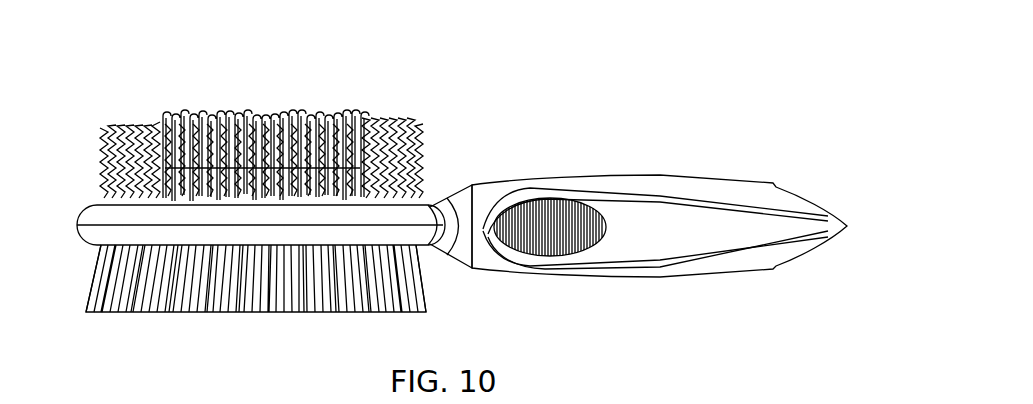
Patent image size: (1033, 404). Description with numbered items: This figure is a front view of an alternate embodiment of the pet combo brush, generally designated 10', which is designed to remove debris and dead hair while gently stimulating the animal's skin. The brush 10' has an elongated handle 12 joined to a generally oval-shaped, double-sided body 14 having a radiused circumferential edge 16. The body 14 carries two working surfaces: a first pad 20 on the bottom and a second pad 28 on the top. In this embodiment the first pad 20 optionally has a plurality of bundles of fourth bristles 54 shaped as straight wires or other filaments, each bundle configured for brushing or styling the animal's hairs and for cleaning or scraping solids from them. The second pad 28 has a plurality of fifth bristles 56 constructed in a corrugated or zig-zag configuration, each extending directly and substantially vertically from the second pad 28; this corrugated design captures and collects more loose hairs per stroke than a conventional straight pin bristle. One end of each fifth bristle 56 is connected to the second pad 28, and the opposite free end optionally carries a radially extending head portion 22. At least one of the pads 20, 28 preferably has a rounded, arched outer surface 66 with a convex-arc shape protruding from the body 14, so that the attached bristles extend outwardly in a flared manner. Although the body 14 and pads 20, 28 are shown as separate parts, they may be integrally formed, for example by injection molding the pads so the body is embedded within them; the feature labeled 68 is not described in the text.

The combo brush 10' is at (76, 70).
The elongated handle 12 is at (660, 174).
The body 14 is at (80, 233).
The radiused circumferential edge 16 is at (78, 213).
The first pad 20 is at (96, 250).
The radially extending head portion 22 is at (250, 112).
The second pad 28 is at (98, 200).
The fourth bristles 54 is at (116, 314).
The fifth bristles 56 is at (160, 118).
The rounded outer surface 66 is at (422, 207).
The collar 68 is at (412, 202).